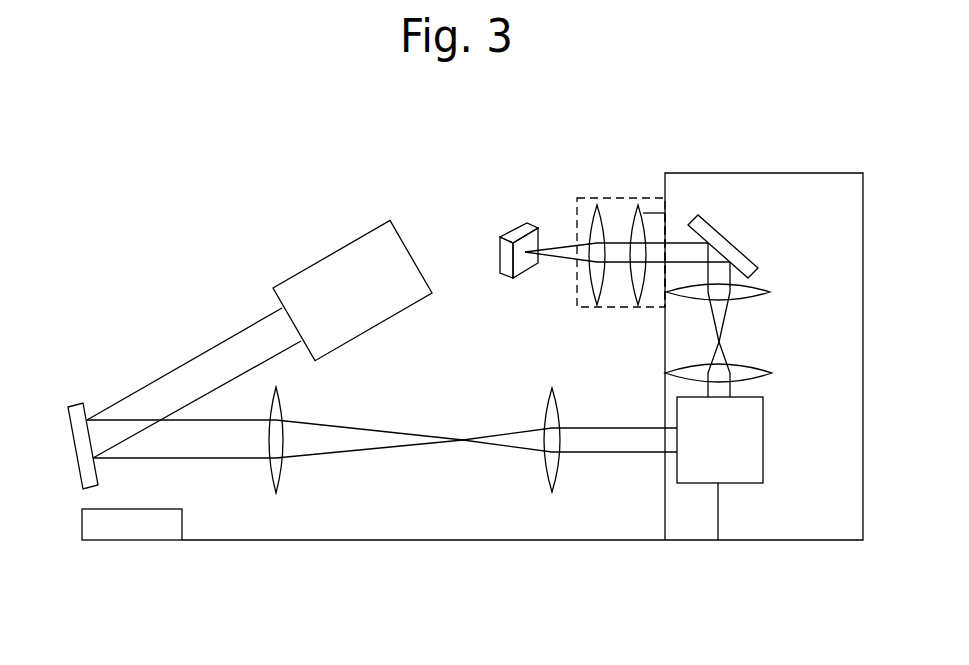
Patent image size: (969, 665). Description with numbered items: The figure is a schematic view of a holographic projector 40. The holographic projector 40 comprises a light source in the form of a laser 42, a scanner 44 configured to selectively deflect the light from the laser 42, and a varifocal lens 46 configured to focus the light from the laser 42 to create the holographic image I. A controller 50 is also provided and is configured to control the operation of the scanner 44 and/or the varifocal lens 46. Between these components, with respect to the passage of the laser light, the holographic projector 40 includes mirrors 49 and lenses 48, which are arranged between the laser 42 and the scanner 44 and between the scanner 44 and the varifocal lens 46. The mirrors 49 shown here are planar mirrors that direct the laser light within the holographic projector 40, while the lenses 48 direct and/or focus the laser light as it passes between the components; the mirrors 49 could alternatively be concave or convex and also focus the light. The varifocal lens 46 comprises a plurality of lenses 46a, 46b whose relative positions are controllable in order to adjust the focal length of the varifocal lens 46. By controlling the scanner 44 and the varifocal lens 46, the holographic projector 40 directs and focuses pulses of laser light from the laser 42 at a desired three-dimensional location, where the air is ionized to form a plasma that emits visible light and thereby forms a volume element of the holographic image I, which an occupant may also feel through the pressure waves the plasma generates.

The holographic projector 40 is at (157, 208).
The laser 42 is at (328, 250).
The scanner 44 is at (675, 470).
The varifocal lens 46 is at (613, 208).
The lens 46a is at (595, 205).
The lens 46b is at (638, 207).
The lens 48 is at (282, 406).
The mirror 49 is at (77, 403).
The controller 50 is at (123, 533).
The holographic image I is at (515, 232).